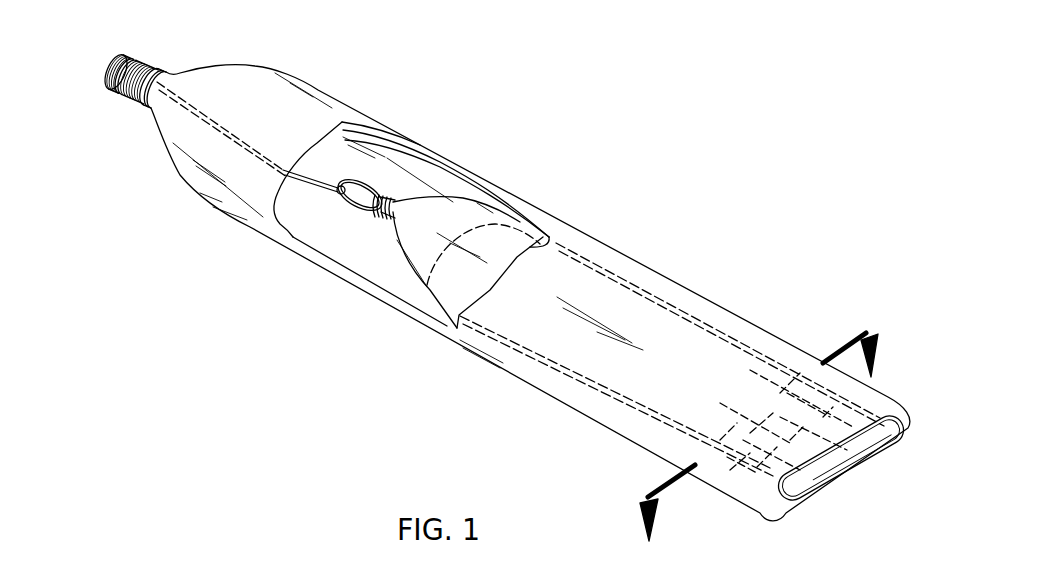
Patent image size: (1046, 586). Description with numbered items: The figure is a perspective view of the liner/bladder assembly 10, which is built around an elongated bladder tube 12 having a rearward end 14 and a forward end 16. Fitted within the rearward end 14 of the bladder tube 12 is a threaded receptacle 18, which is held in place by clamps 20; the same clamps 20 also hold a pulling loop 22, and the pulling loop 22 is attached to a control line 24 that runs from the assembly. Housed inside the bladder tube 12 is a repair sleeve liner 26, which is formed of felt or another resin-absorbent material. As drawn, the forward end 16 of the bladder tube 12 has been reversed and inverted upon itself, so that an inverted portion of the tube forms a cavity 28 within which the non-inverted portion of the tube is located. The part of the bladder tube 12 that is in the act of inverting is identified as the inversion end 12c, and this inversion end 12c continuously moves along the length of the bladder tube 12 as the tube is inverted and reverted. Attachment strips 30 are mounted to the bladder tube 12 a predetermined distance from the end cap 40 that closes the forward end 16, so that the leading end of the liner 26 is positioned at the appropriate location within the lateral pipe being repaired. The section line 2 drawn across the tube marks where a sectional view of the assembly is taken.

The liner/bladder assembly 10 is at (683, 188).
The bladder tube 12 is at (536, 207).
The inversion end 12c is at (813, 483).
The rearward end 14 is at (440, 212).
The forward end 16 is at (213, 85).
The threaded receptacle 18 is at (383, 182).
The clamps 20 is at (388, 218).
The pulling loop 22 is at (350, 207).
The control line 24 is at (307, 185).
The repair sleeve liner 26 is at (478, 266).
The cavity 28 is at (393, 260).
The attachment strips 30 is at (757, 370).
The end cap 40 is at (123, 88).
The section line 2 is at (755, 437).